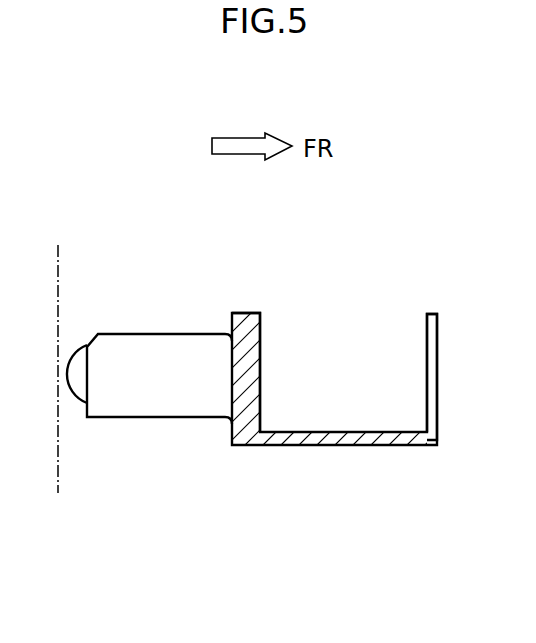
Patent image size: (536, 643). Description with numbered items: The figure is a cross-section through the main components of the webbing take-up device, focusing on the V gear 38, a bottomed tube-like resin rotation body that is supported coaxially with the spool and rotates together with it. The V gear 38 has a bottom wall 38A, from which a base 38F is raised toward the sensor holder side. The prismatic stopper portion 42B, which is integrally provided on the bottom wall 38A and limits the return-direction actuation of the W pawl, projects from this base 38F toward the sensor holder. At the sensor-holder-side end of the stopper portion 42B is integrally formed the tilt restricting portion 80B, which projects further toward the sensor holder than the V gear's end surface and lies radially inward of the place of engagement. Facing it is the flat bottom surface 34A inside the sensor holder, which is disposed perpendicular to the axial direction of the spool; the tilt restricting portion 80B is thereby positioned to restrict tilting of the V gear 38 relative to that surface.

The bottom surface 34A is at (58, 472).
The V gear 38 is at (267, 303).
The bottom wall 38A is at (427, 343).
The base 38F is at (255, 370).
The stopper portion 42B is at (185, 350).
The tilt restricting portion 80B is at (78, 363).